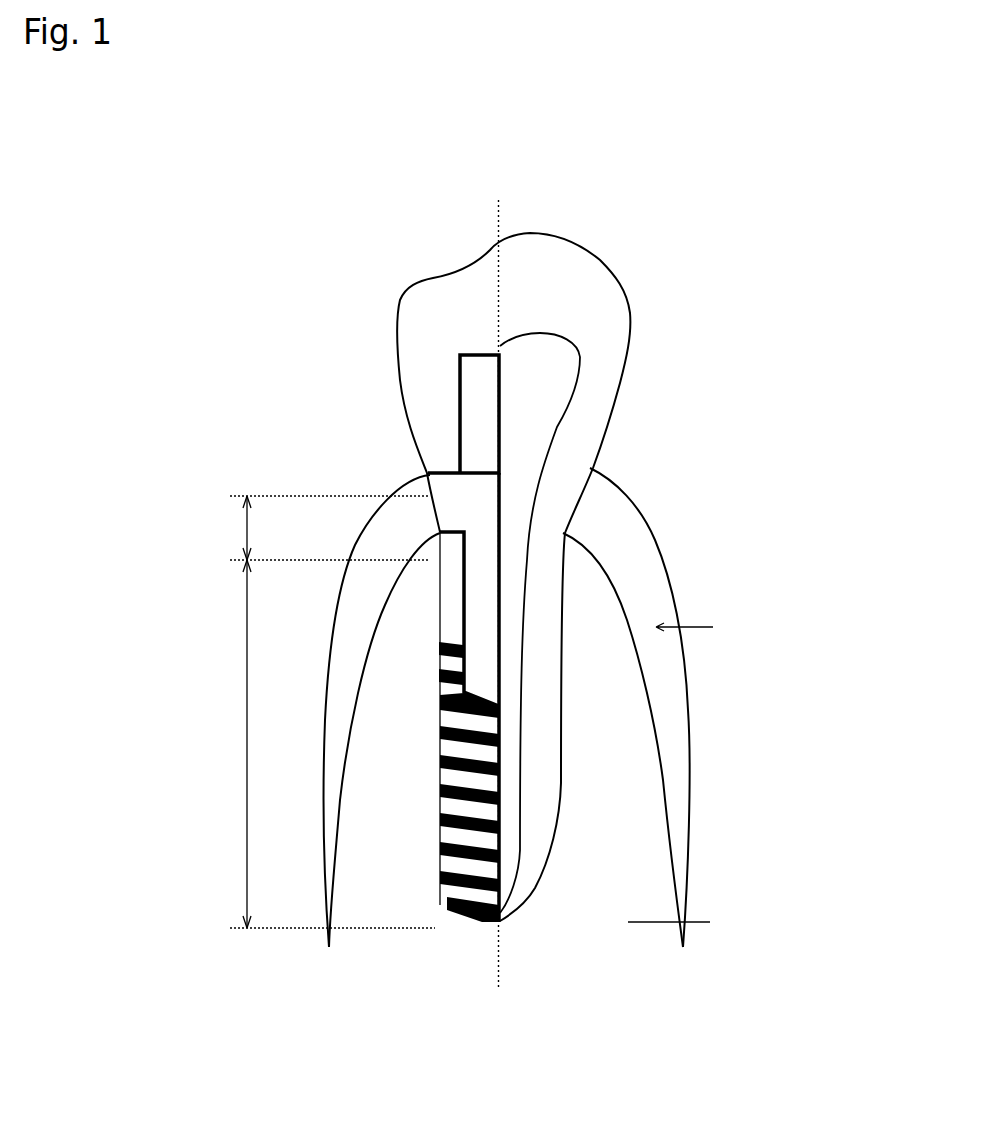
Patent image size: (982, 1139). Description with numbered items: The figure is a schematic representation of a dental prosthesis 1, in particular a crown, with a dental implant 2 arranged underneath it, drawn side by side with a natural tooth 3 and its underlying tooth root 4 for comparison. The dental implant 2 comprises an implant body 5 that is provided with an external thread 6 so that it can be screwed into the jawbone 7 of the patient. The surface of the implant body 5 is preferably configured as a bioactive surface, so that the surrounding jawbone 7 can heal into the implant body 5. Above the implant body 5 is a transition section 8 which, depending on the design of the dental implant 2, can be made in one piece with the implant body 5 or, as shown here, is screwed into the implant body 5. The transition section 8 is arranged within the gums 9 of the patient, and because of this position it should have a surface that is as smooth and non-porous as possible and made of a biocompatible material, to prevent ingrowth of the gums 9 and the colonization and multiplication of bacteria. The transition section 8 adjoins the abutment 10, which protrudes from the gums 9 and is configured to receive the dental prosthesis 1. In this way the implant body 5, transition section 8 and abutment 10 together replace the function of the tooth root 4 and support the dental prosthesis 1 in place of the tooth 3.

The dental prosthesis 1 is at (405, 292).
The dental implant 2 is at (441, 453).
The tooth 3 is at (613, 272).
The tooth root 4 is at (563, 572).
The implant body 5 is at (318, 744).
The external thread 6 is at (447, 877).
The jawbone 7 is at (605, 772).
The transition section 8 is at (315, 528).
The gums 9 is at (600, 513).
The abutment 10 is at (460, 383).